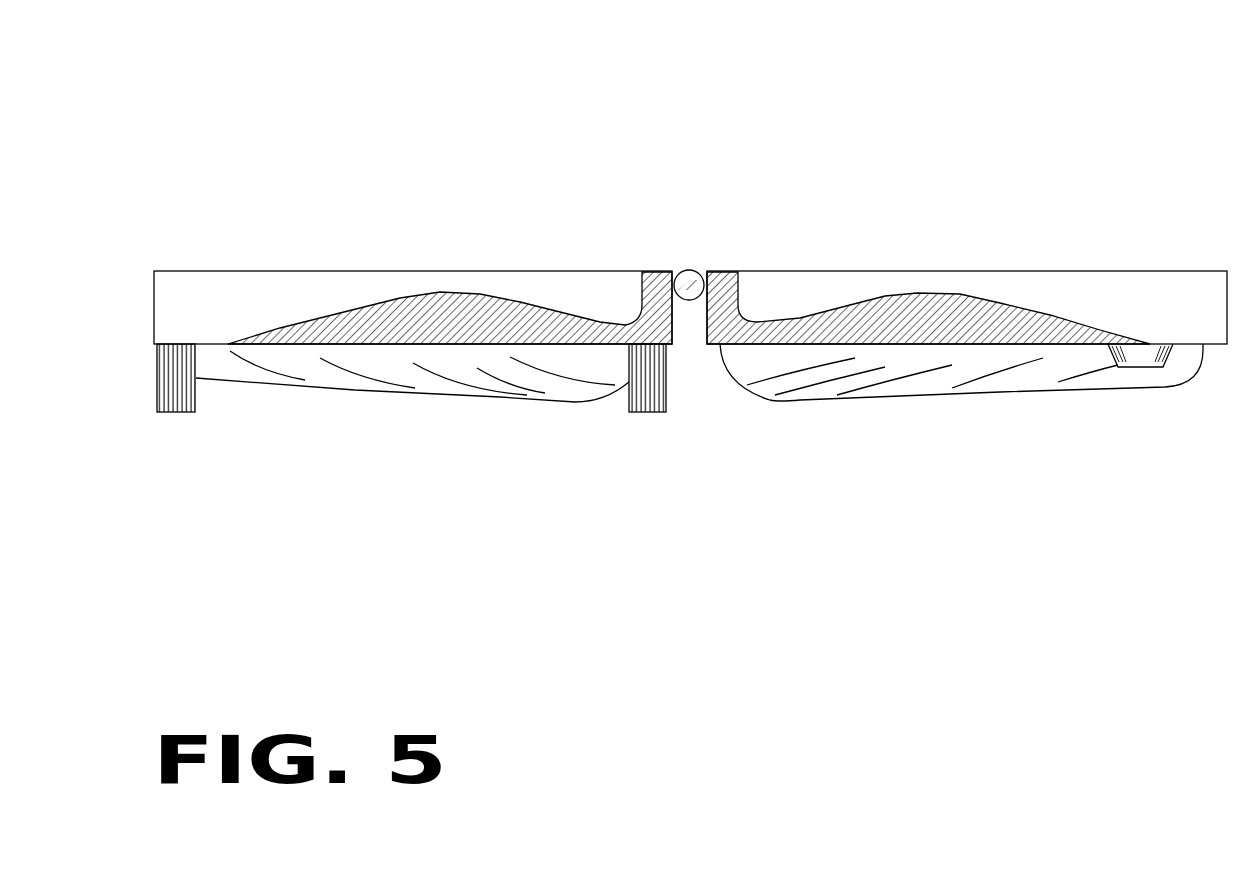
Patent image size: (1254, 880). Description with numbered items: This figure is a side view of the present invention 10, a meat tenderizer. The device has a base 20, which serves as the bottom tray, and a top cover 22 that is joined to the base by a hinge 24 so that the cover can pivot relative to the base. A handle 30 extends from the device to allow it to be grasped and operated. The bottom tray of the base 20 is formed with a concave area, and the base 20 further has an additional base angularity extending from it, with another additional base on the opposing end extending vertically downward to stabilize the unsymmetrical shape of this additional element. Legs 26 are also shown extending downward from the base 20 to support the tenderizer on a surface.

The present invention 10 is at (1004, 170).
The base 20 is at (392, 338).
The top cover 22 is at (891, 318).
The hinge 24 is at (685, 282).
The legs 26 is at (661, 398).
The handle 30 is at (1140, 352).